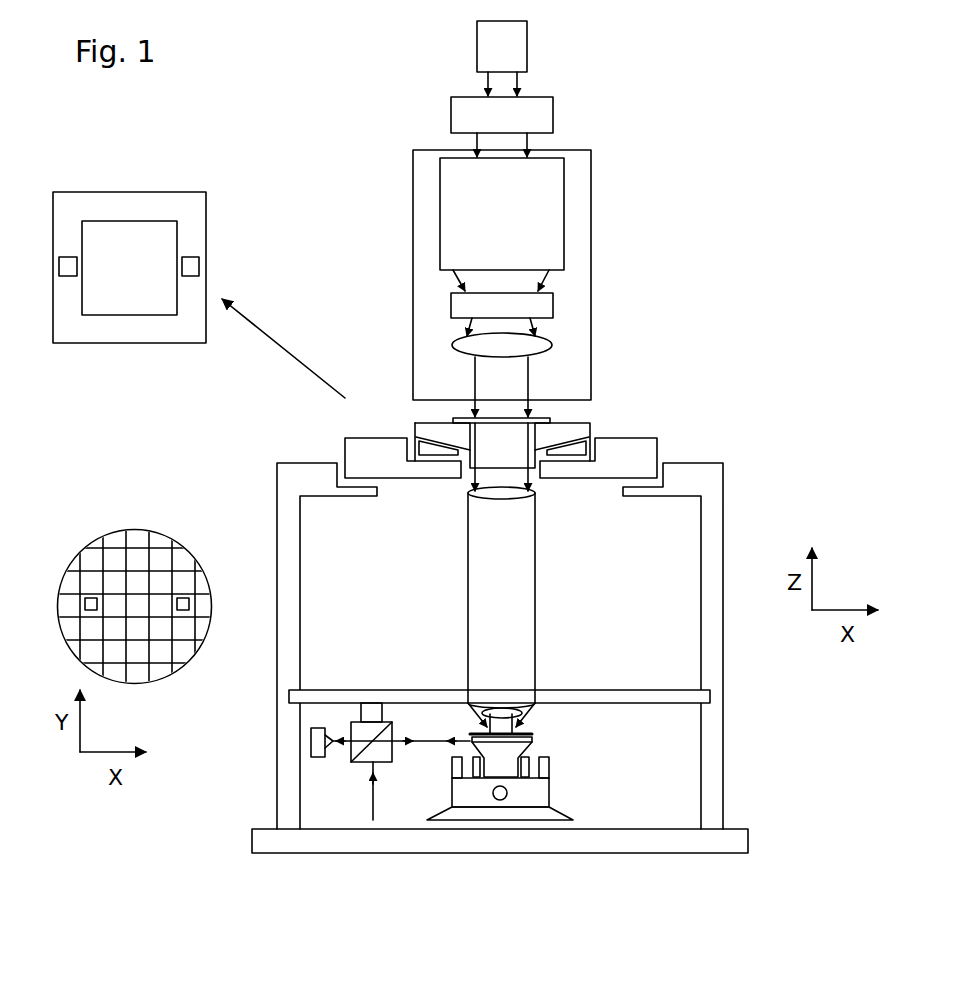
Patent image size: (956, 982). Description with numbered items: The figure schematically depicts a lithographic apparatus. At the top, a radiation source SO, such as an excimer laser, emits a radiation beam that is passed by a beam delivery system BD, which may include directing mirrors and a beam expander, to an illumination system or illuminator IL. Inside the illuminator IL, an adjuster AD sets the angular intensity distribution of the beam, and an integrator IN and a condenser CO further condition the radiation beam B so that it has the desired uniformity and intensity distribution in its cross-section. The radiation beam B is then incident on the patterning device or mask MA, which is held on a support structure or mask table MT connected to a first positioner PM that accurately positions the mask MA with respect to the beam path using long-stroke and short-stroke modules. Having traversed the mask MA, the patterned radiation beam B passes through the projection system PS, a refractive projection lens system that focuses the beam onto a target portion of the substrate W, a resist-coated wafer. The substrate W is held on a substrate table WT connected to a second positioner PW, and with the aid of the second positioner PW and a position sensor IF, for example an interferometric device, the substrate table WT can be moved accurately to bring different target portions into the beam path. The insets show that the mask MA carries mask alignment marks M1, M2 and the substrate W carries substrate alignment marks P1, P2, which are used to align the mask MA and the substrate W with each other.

The radiation source SO is at (527, 52).
The beam delivery system BD is at (553, 120).
The illumination system (illuminator) IL is at (591, 171).
The adjuster AD is at (564, 223).
The integrator IN is at (553, 305).
The condenser CO is at (551, 345).
The radiation beam B is at (505, 410).
The patterning device (mask) MA is at (452, 421).
The support structure (mask table) MT is at (590, 429).
The first positioner PM is at (347, 438).
The projection system PS is at (537, 586).
The substrate W is at (222, 601).
The substrate table WT is at (533, 742).
The second positioner PW is at (550, 797).
The position sensor IF is at (342, 767).
The mask alignment mark M1 is at (192, 257).
The mask alignment mark M2 is at (65, 257).
The substrate alignment mark P1 is at (90, 598).
The substrate alignment mark P2 is at (183, 598).